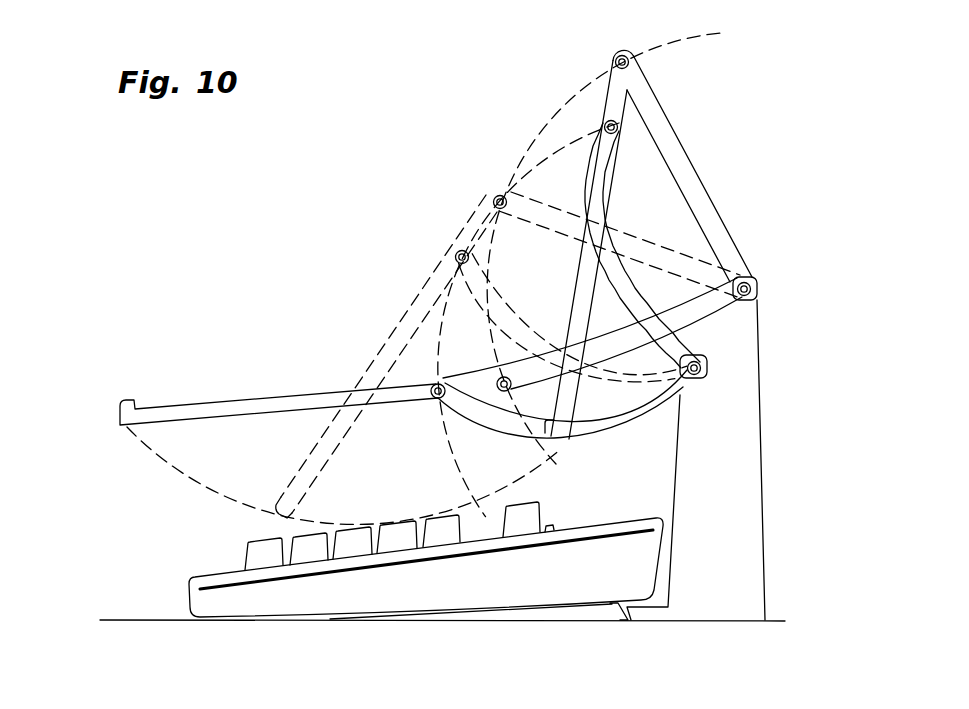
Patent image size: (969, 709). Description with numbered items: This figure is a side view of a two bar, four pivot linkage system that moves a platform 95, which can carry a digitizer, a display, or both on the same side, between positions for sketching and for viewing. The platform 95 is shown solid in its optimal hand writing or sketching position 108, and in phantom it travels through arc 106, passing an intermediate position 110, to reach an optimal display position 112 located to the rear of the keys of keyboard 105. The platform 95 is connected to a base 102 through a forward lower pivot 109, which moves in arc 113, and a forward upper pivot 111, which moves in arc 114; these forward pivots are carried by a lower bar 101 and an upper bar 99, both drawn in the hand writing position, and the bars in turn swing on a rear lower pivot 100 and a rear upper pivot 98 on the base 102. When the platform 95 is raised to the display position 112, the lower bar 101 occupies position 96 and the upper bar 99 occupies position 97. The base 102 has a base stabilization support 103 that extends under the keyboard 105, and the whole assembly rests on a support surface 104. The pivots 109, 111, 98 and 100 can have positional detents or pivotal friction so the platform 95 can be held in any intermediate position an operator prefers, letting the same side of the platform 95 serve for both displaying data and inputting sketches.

The platform 95 is at (609, 96).
The position of lower bar 96 is at (614, 220).
The position of upper bar 97 is at (718, 210).
The rear upper pivot 98 is at (757, 278).
The upper bar 99 is at (713, 320).
The rear lower pivot 100 is at (708, 367).
The lower bar 101 is at (641, 414).
The base 102 is at (763, 500).
The base stabilization support 103 is at (478, 612).
The support surface 104 is at (118, 619).
The keyboard 105 is at (208, 573).
The arc 106 is at (142, 447).
The optimal hand writing or sketching position 108 is at (226, 399).
The forward lower pivot 109 is at (431, 387).
The intermediate position 110 is at (400, 330).
The forward upper pivot 111 is at (498, 378).
The optimal display position 112 is at (585, 282).
The arc 113 is at (527, 173).
The arc 114 is at (546, 122).